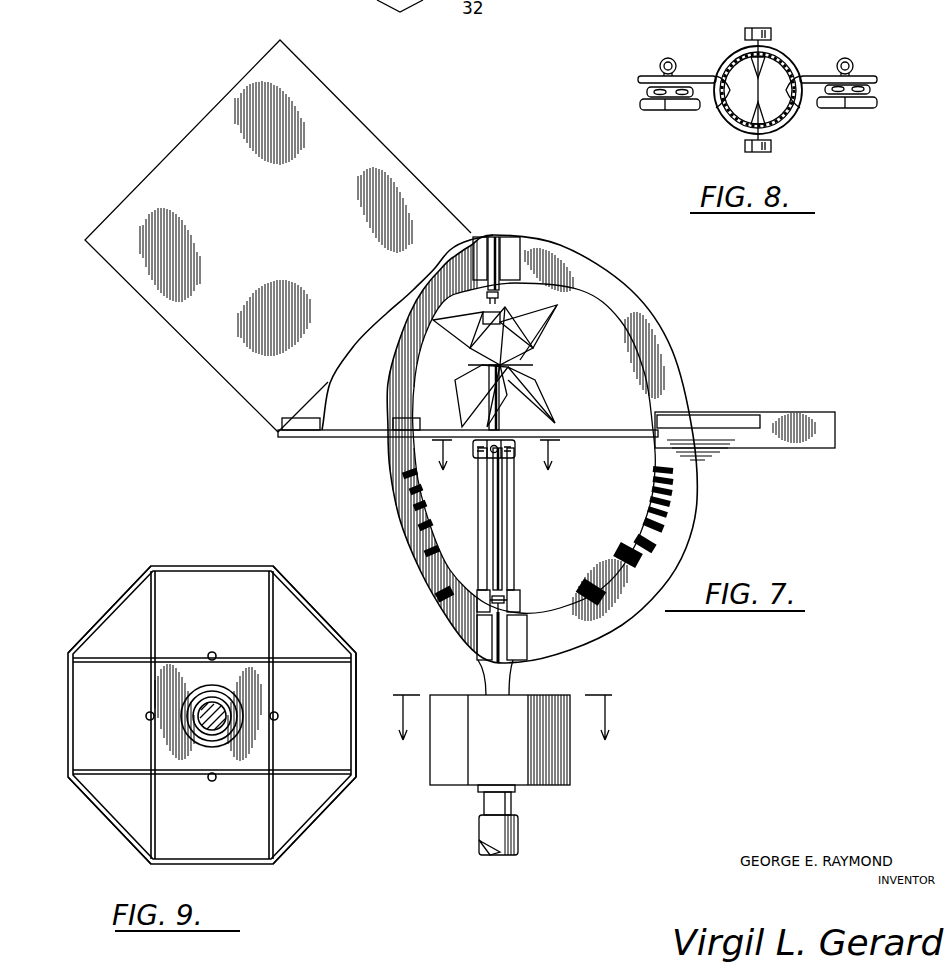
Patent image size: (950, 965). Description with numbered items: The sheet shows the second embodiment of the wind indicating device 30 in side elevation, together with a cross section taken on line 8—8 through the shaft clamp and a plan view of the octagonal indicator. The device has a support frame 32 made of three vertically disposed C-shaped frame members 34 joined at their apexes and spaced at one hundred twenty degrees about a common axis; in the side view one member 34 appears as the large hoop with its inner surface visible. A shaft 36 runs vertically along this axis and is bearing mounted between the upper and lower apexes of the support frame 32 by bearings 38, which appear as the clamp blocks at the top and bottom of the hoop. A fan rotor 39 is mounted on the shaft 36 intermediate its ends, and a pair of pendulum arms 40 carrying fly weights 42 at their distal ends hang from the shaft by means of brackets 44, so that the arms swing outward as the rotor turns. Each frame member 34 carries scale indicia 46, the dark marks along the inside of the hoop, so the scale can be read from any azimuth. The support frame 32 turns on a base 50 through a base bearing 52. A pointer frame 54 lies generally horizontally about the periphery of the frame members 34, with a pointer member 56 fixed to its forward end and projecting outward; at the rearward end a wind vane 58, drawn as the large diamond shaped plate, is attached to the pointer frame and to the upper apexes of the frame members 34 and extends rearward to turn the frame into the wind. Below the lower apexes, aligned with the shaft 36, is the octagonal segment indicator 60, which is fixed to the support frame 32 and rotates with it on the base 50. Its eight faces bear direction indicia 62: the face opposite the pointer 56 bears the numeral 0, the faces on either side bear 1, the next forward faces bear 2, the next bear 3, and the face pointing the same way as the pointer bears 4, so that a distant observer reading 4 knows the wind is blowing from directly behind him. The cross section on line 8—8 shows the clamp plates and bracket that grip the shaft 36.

In FIG. 7, the wind indicating device 30 is at (707, 391).
In FIG. 7, the support frame 32 is at (379, 485).
In FIG. 7, the C-shaped frame members 34 is at (393, 527).
In FIG. 7, the shaft 36 is at (499, 520).
In FIG. 8, the shaft 36 is at (790, 62).
In FIG. 7, the bearings 38 is at (520, 246).
In FIG. 7, the fan rotor 39 is at (540, 327).
In FIG. 7, the pendulum arms 40 is at (507, 505).
In FIG. 8, the pendulum arms 40 is at (647, 92).
In FIG. 7, the fly weights 42 is at (520, 596).
In FIG. 7, the brackets 44 is at (513, 458).
In FIG. 8, the brackets 44 is at (877, 102).
In FIG. 7, the scale indicia 46 is at (622, 547).
In FIG. 7, the base 50 is at (515, 835).
In FIG. 7, the base bearing 52 is at (512, 805).
In FIG. 7, the pointer frame 54 is at (624, 418).
In FIG. 7, the pointer member 56 is at (815, 413).
In FIG. 7, the wind vane 58 is at (395, 165).
In FIG. 7, the octagonal segment indicator 60 is at (582, 774).
In FIG. 9, the octagonal segment indicator 60 is at (209, 708).
In FIG. 7, the direction indicia 62 is at (462, 760).
In FIG. 7, the section line 8- 8 is at (496, 461).
In FIG. 7, the face numeral 4 is at (510, 717).
In FIG. 9, the face numeral 4 is at (358, 715).
In FIG. 9, the face numeral 0 is at (66, 715).
In FIG. 9, the face numeral 1 is at (116, 822).
In FIG. 9, the face numeral 2 is at (212, 874).
In FIG. 9, the face numeral 3 is at (314, 816).